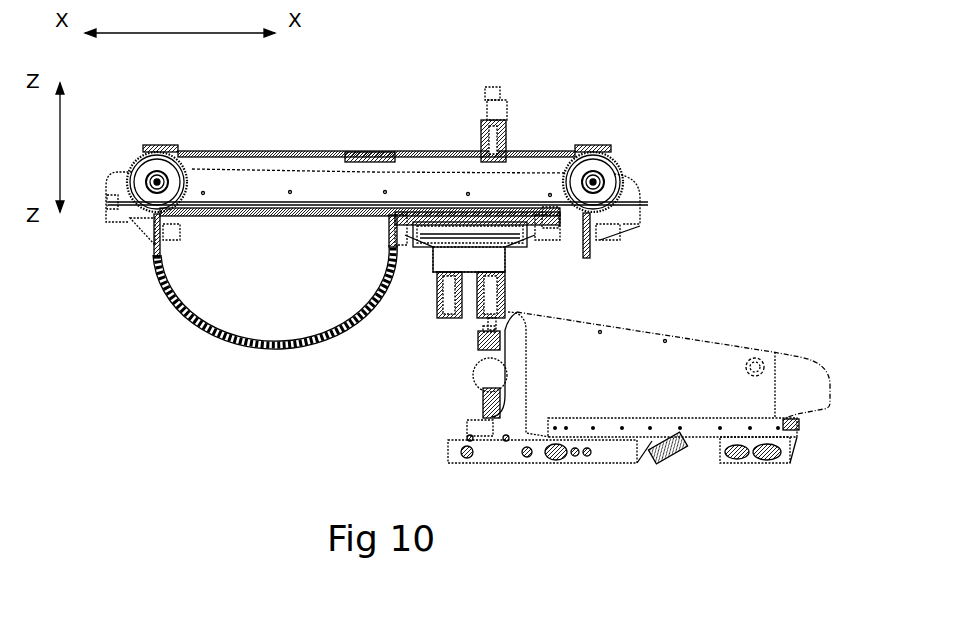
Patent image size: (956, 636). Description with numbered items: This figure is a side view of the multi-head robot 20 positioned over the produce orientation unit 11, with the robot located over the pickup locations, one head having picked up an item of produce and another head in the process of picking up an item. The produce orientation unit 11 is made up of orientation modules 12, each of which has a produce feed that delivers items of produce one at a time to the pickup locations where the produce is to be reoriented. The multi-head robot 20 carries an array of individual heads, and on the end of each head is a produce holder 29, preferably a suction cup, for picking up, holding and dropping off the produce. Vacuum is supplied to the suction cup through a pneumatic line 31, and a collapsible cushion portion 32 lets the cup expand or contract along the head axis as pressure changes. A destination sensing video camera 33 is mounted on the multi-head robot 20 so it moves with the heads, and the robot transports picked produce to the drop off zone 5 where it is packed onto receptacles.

The drop off zone 5 is at (374, 269).
The multi-head robot 20 is at (466, 114).
The destination sensing video camera 33 is at (374, 150).
The produce holder 29 is at (394, 353).
The produce orientation unit 11 is at (577, 405).
The orientation module 12 is at (700, 397).
The pneumatic line 31 is at (488, 338).
The collapsible cushion portion 32 is at (480, 364).